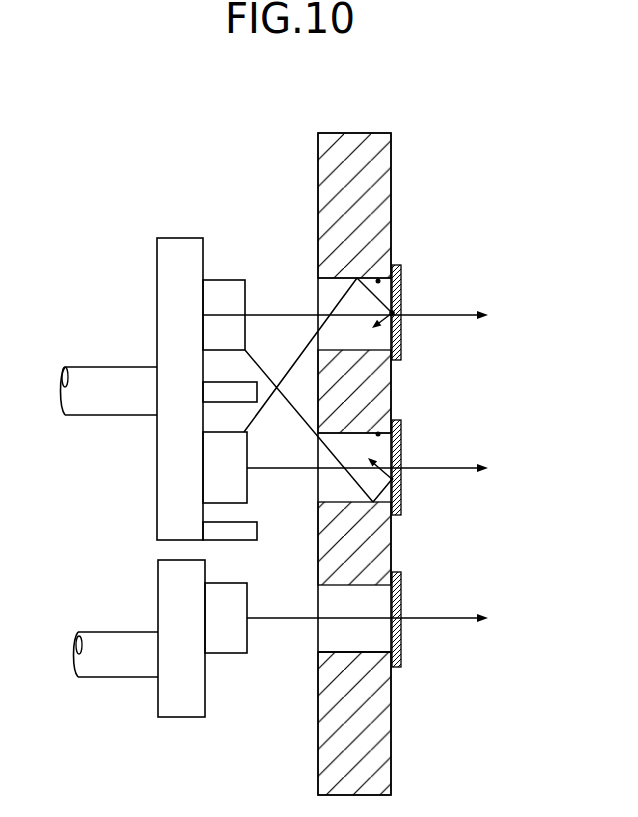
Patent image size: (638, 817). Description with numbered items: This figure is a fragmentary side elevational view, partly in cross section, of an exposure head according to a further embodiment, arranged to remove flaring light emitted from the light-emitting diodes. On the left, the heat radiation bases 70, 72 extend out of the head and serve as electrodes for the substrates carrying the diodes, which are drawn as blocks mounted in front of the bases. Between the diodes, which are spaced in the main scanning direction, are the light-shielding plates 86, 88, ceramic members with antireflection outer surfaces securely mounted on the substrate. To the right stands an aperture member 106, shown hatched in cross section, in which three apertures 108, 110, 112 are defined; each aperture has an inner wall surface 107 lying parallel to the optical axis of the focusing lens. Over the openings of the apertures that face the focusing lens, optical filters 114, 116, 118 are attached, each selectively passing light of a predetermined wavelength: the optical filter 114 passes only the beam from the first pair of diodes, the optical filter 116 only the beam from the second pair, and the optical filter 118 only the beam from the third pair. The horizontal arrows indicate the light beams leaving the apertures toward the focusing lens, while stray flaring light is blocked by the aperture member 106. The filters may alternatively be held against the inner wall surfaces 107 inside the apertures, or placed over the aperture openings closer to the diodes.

The heat radiation base 70 is at (92, 385).
The heat radiation base 72 is at (103, 647).
The light-shielding plate 86 is at (218, 393).
The light-shielding plate 88 is at (245, 532).
The aperture member 106 is at (382, 192).
The inner wall surface 107 is at (378, 282).
The aperture 108 is at (345, 285).
The aperture 110 is at (355, 498).
The aperture 112 is at (380, 642).
The optical filter 114 is at (400, 290).
The optical filter 116 is at (400, 507).
The optical filter 118 is at (400, 593).